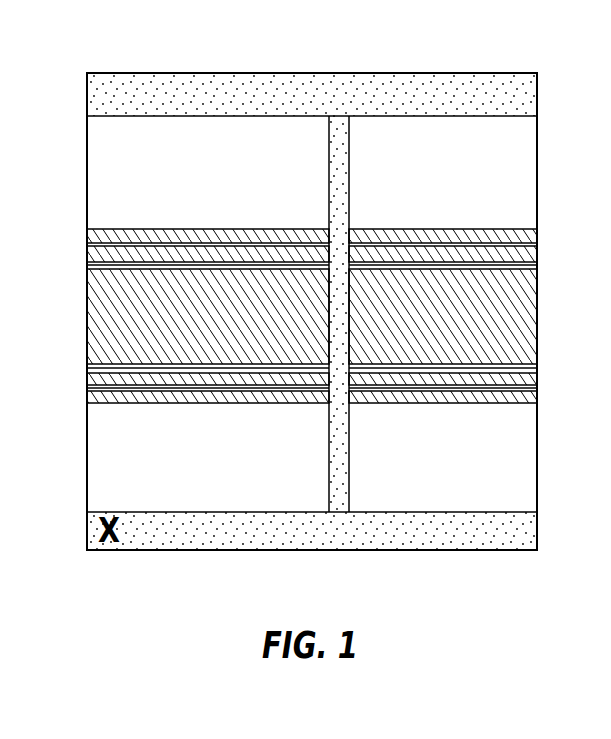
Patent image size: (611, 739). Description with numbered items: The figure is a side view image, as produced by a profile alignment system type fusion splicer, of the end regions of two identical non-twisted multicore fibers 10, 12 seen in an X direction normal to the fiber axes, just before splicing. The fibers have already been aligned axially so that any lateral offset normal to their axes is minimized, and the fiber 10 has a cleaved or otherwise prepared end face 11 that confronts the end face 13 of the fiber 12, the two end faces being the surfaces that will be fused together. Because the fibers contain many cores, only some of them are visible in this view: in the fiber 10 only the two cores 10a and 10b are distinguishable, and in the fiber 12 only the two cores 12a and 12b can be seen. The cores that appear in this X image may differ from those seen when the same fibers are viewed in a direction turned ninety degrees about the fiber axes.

The fiber 10 is at (208, 311).
The core 10a is at (136, 248).
The core 10b is at (197, 368).
The end face 11 is at (325, 297).
The fiber 12 is at (462, 330).
The core 12a is at (419, 248).
The core 12b is at (538, 382).
The end face 13 is at (355, 348).